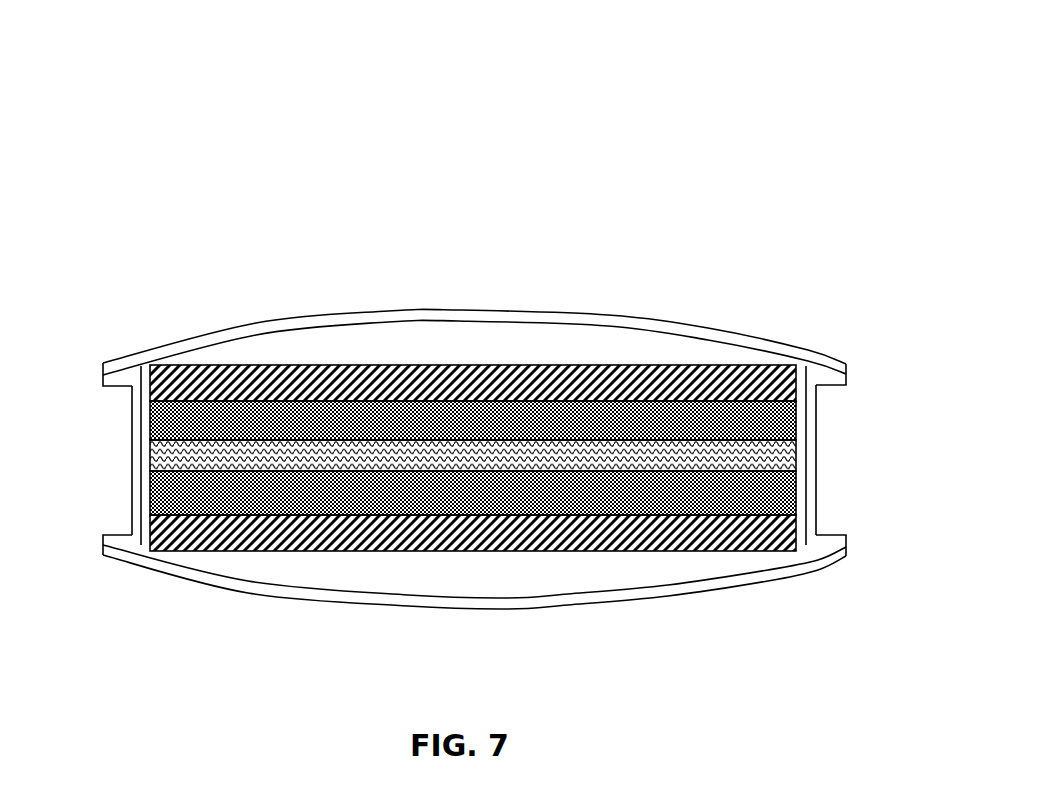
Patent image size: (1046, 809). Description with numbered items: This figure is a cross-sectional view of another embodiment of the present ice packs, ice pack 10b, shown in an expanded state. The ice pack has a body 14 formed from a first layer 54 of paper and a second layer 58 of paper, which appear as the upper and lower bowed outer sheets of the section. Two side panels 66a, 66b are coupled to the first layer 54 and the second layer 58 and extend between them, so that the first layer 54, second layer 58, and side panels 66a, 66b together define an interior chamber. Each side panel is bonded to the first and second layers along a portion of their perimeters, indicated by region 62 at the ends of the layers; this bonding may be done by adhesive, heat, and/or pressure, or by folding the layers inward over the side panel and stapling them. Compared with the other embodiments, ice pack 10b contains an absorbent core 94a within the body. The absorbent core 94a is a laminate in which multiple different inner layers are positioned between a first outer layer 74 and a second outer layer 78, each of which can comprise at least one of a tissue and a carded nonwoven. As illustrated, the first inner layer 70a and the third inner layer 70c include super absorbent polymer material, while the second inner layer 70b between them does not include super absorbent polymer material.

The ice pack 10b is at (112, 73).
The body 14 is at (473, 300).
The first layer 54 is at (248, 313).
The second layer 58 is at (203, 578).
The region 62 is at (840, 367).
The side panel 66a is at (810, 513).
The side panel 66b is at (123, 407).
The first inner layer 70a is at (790, 413).
The second inner layer 70b is at (788, 443).
The third inner layer 70c is at (788, 482).
The first outer layer 74 is at (687, 543).
The second outer layer 78 is at (690, 358).
The absorbent core 94a is at (337, 557).